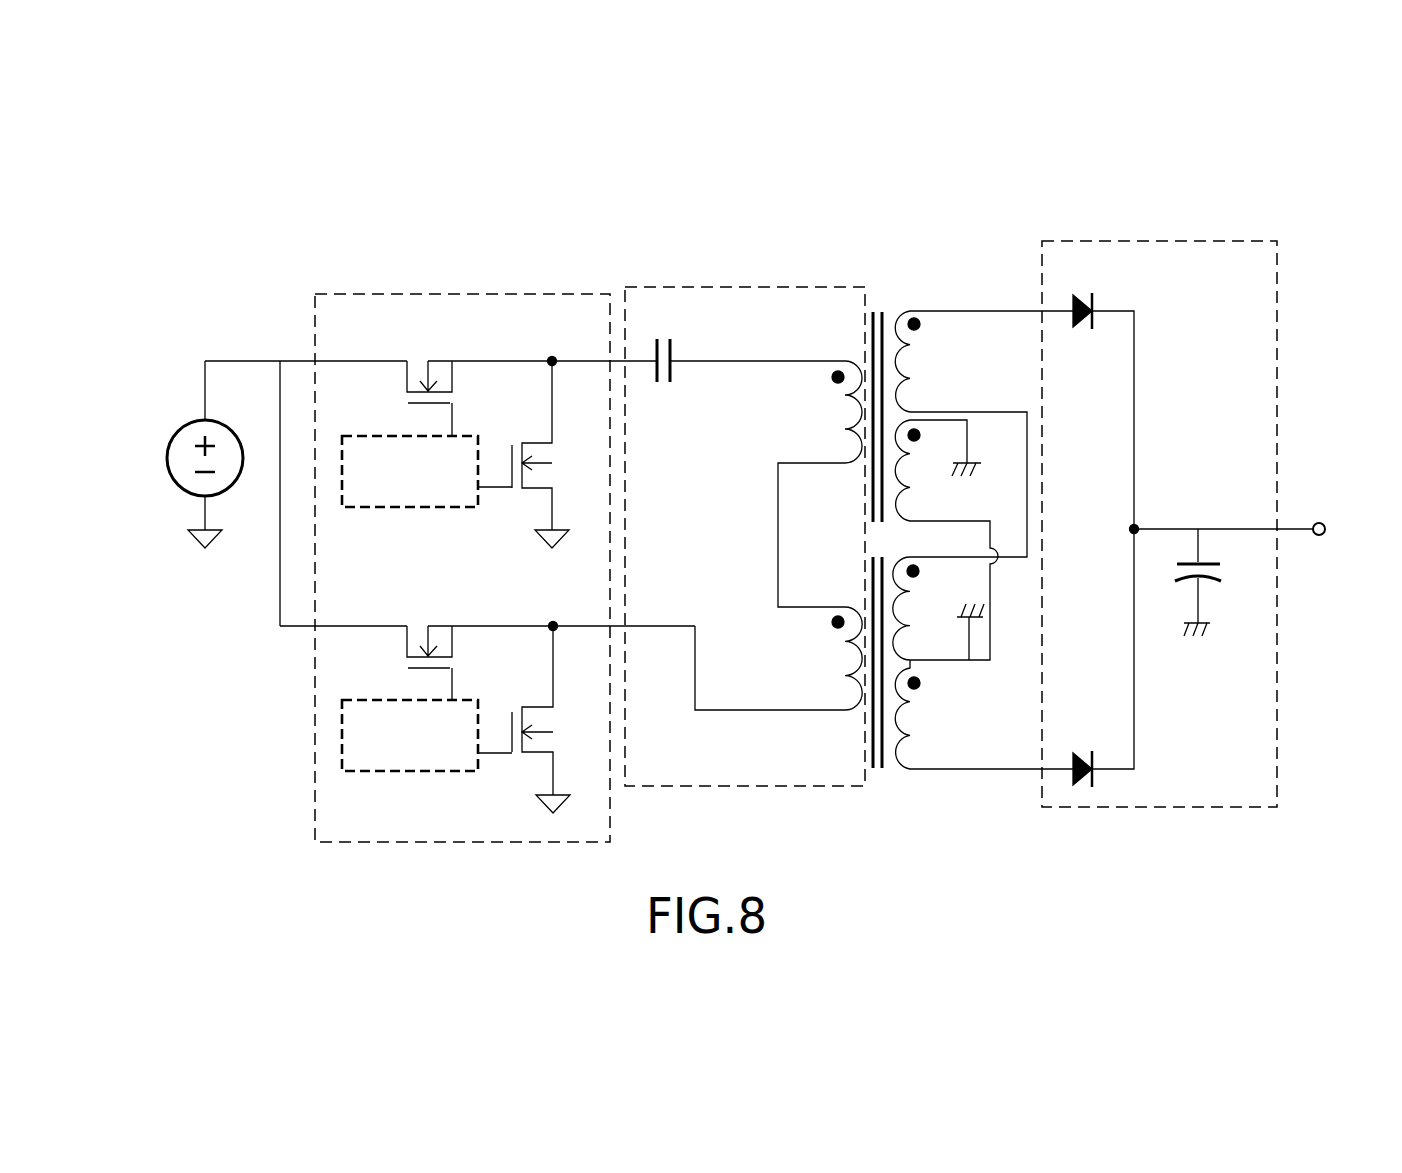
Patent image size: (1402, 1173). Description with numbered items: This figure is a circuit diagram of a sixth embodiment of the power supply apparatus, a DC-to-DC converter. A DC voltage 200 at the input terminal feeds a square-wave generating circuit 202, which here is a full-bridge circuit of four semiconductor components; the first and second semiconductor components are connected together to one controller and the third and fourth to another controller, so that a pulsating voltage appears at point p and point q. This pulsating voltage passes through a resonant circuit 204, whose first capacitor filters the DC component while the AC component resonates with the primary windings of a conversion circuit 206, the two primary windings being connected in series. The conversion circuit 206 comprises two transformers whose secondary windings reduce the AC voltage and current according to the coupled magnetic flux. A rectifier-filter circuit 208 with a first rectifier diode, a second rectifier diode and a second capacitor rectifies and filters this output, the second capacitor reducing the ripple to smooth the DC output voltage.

The DC voltage 200 is at (174, 458).
The square-wave generating circuit 202 is at (405, 294).
The resonant circuit 204 is at (714, 287).
The conversion circuit 206 is at (909, 270).
The rectifier-filter circuit 208 is at (1128, 241).